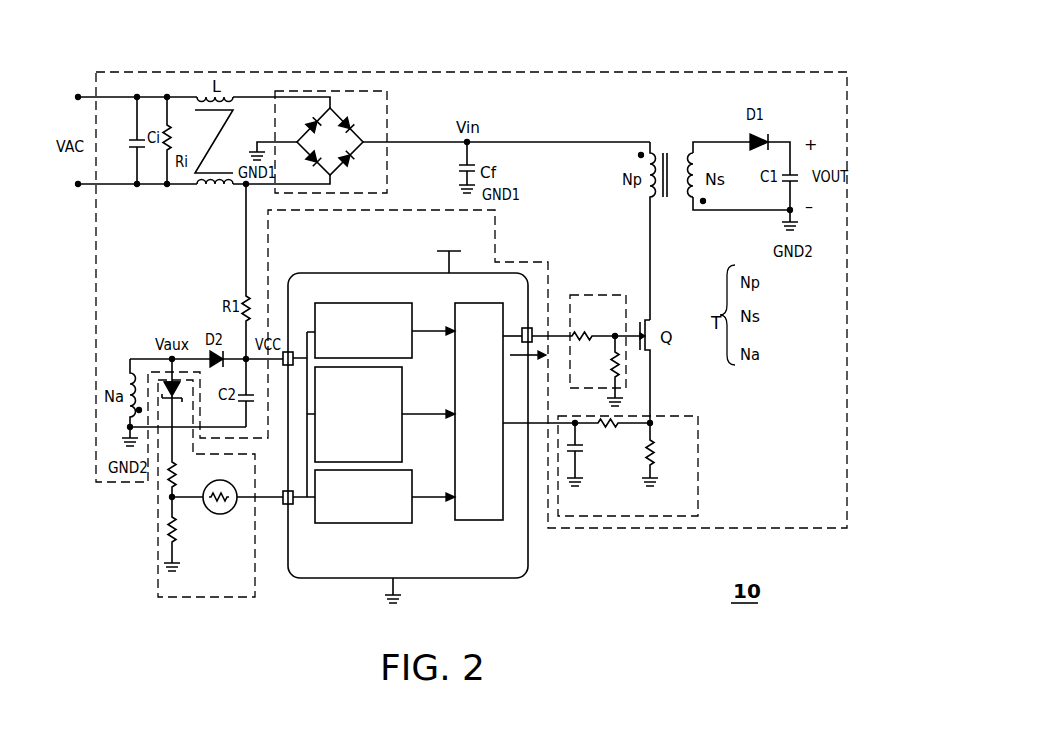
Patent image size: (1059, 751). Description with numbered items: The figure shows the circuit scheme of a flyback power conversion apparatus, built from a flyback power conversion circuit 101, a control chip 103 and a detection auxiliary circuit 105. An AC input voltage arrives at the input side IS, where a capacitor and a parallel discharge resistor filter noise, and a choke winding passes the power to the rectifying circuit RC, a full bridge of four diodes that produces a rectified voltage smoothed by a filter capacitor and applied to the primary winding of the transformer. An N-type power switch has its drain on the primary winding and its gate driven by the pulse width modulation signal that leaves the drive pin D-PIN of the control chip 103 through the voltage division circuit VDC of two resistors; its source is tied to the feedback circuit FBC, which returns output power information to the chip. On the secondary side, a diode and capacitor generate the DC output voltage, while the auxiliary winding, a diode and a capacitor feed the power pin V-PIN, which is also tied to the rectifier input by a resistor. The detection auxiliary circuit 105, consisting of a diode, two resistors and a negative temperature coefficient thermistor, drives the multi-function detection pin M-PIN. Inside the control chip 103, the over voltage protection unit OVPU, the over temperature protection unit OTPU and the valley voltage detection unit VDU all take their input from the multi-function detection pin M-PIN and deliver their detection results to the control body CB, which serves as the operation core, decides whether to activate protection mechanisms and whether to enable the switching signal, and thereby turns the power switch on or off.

The flyback power conversion circuit 101 is at (632, 71).
The control chip 103 is at (385, 272).
The detection auxiliary circuit 105 is at (158, 574).
The rectifying circuit RC is at (397, 112).
The voltage division circuit VDC is at (590, 292).
The feedback circuit FBC is at (707, 437).
The over voltage protection unit OVPU is at (368, 303).
The over temperature protection unit OTPU is at (402, 390).
The valley voltage detection unit VDU is at (360, 523).
The control body CB is at (478, 520).
The power pin V-PIN is at (290, 351).
The drive pin D-PIN is at (526, 327).
The multi-function detection pin M-PIN is at (293, 504).
The input side IS is at (92, 95).